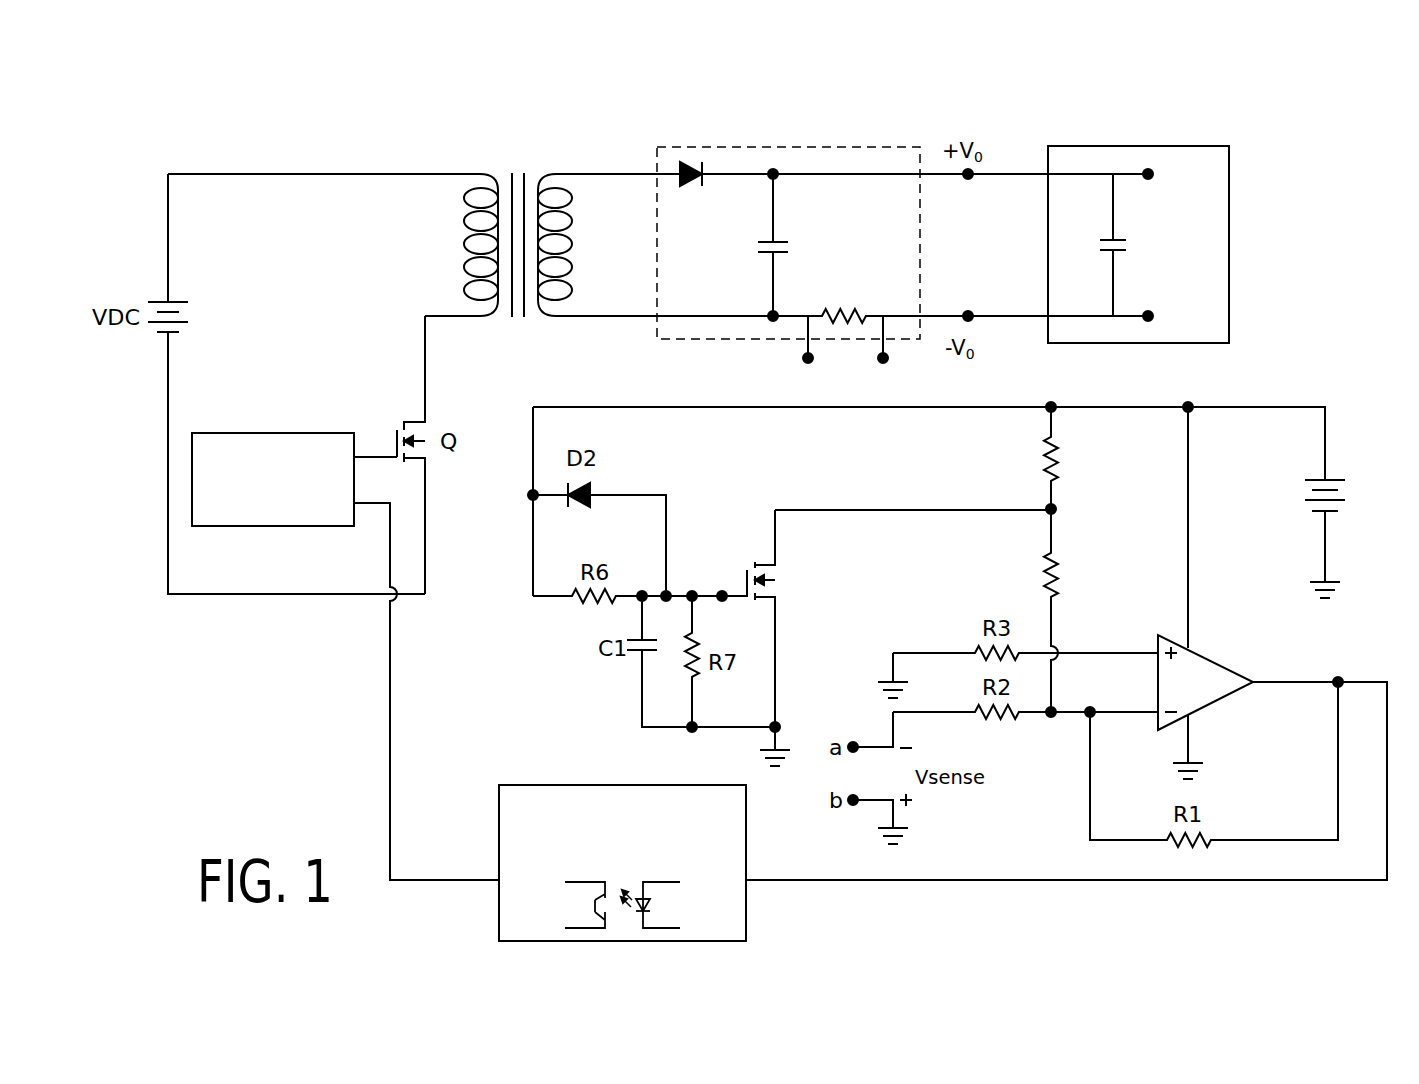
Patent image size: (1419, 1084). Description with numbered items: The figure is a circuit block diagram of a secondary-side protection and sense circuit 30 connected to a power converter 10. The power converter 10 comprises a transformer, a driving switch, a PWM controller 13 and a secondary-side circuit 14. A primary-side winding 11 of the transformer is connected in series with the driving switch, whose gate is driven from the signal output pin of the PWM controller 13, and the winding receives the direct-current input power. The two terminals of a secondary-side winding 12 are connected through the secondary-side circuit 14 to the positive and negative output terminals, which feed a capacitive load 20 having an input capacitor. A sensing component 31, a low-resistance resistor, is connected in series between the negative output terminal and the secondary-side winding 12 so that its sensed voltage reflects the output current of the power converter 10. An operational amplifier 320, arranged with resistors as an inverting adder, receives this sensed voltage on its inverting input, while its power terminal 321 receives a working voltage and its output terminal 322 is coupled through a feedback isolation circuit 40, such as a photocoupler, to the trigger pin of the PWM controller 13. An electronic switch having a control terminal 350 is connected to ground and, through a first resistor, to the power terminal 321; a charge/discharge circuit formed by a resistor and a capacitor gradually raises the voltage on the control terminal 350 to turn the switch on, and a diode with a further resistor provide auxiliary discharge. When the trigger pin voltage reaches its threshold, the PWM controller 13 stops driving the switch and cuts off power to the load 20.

The power converter 10 is at (708, 116).
The primary-side winding 11 is at (463, 244).
The secondary-side winding 12 is at (569, 222).
The PWM controller 13 is at (278, 433).
The secondary-side circuit 14 is at (797, 147).
The load 20 is at (1229, 210).
The secondary-side protection and sense circuit 30 is at (1295, 376).
The sensing component 31 is at (845, 316).
The feedback isolation circuit 40 is at (585, 785).
The operational amplifier 320 is at (1200, 692).
The power terminal 321 is at (1190, 648).
The output terminal 322 is at (1253, 680).
The control terminal 350 is at (722, 591).